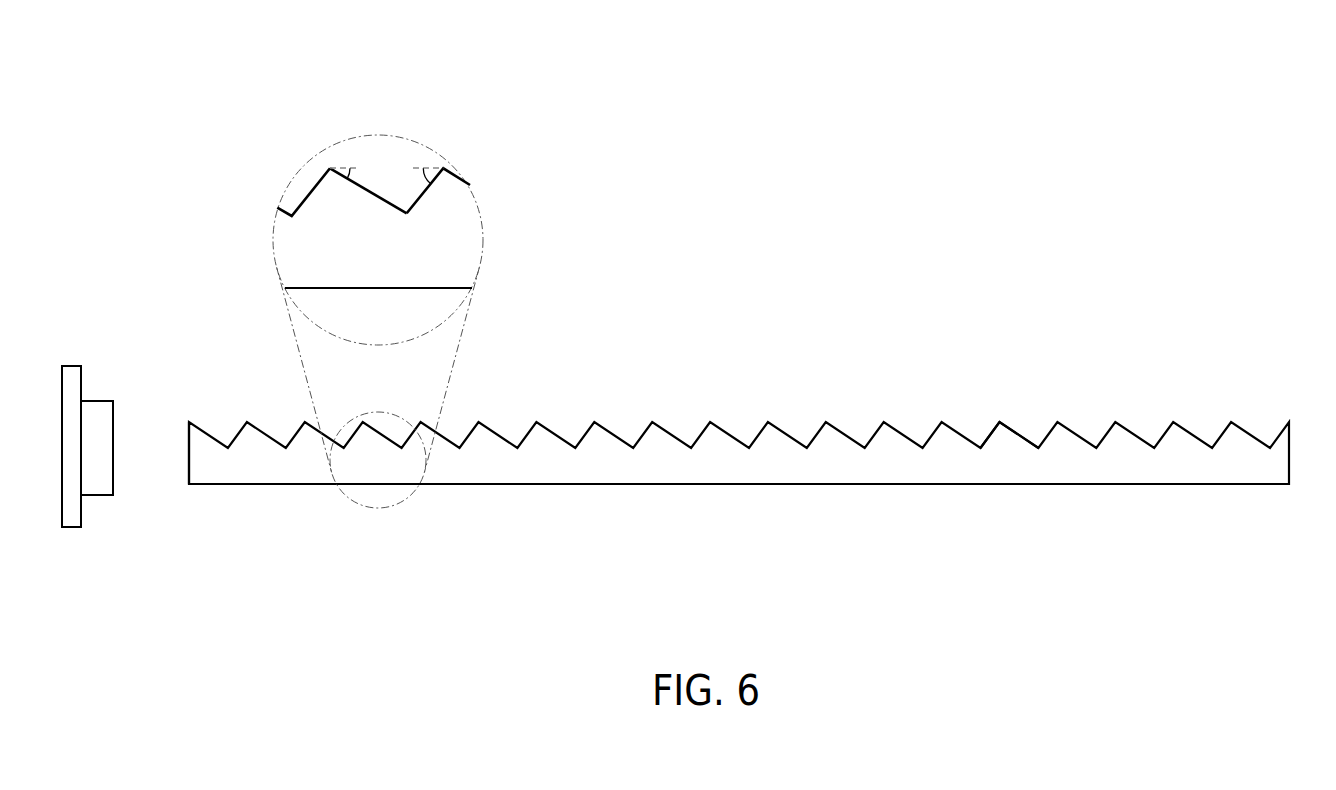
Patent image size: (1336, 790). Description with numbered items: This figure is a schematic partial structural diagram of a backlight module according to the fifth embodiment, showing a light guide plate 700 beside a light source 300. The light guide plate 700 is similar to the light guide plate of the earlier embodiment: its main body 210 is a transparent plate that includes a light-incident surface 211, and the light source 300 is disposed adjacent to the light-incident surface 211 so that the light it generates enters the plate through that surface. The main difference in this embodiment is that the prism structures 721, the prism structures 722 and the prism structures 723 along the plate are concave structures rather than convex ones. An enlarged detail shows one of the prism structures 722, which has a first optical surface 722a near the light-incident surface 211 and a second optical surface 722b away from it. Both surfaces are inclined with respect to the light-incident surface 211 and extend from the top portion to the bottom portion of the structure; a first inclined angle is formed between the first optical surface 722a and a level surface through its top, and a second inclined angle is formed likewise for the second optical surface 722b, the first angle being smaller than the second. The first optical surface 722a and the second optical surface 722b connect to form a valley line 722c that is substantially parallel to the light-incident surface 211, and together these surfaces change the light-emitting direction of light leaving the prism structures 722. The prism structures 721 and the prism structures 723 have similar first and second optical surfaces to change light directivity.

The light source 300 is at (72, 375).
The light guide plate 700 is at (701, 444).
The prism structures 721 is at (284, 430).
The prism structures 722 is at (401, 148).
The first optical surface 722a is at (345, 190).
The second optical surface 722b is at (418, 192).
The valley line 722c is at (407, 213).
The prism structures 723 is at (1015, 440).
The main body 210 is at (987, 465).
The light-incident surface 211 is at (189, 467).